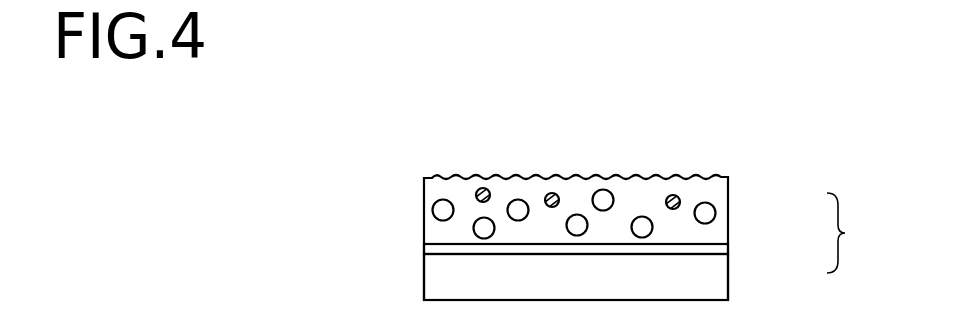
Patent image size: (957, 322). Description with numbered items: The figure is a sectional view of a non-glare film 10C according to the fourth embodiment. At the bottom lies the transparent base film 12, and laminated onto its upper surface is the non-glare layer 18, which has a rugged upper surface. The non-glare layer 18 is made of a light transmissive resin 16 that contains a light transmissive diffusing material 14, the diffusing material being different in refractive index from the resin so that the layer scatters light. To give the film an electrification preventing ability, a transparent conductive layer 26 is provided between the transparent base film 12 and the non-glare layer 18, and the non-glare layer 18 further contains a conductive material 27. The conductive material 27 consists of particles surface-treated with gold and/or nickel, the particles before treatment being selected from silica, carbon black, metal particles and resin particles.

The non-glare film 10C is at (403, 182).
The transparent base film 12 is at (707, 278).
The light transmissive diffusing material 14 is at (705, 213).
The light transmissive resin 16 is at (708, 233).
The non-glare layer 18 is at (858, 233).
The transparent conductive layer 26 is at (436, 247).
The conductive material 27 is at (672, 194).